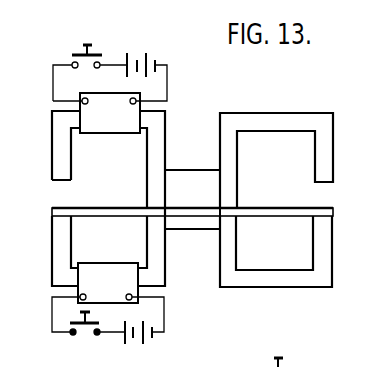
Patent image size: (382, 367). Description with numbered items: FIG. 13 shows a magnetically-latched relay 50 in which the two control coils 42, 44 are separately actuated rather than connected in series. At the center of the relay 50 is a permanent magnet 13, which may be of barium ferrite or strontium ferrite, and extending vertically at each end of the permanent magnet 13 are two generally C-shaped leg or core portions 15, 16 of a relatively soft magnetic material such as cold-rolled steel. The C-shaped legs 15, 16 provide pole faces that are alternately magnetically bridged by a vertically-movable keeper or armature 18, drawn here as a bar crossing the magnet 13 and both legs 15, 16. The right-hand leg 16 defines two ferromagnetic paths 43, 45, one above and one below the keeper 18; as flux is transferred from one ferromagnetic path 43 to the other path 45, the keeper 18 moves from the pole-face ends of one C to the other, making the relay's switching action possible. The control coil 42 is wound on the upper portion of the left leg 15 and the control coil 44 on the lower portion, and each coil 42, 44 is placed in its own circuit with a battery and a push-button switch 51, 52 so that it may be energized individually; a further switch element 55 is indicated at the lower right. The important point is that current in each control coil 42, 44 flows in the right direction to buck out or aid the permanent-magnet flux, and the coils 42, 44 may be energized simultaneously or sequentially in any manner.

The permanent magnet 13 is at (193, 170).
The C-shaped leg or core portion 15 is at (52, 126).
The C-shaped leg or core portion 16 is at (298, 201).
The keeper or armature 18 is at (102, 207).
The control coil 42 is at (117, 128).
The ferromagnetic path 43 is at (301, 122).
The control coil 44 is at (95, 267).
The ferromagnetic path 45 is at (284, 281).
The relay 50 is at (292, 196).
The upper push-button switch 51 is at (95, 52).
The lower push-button switch 52 is at (82, 335).
The switch 55 is at (290, 366).